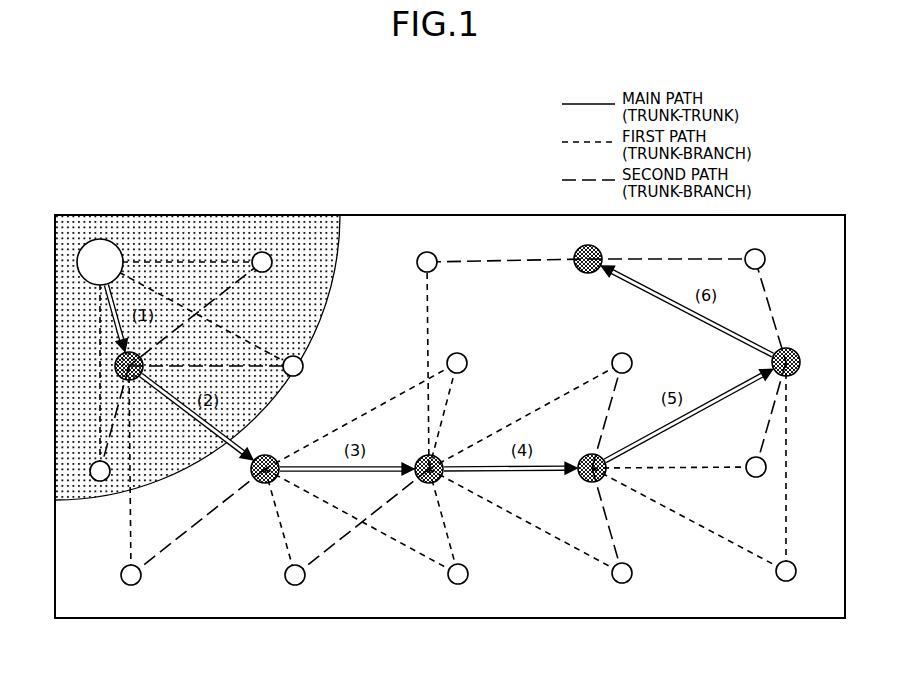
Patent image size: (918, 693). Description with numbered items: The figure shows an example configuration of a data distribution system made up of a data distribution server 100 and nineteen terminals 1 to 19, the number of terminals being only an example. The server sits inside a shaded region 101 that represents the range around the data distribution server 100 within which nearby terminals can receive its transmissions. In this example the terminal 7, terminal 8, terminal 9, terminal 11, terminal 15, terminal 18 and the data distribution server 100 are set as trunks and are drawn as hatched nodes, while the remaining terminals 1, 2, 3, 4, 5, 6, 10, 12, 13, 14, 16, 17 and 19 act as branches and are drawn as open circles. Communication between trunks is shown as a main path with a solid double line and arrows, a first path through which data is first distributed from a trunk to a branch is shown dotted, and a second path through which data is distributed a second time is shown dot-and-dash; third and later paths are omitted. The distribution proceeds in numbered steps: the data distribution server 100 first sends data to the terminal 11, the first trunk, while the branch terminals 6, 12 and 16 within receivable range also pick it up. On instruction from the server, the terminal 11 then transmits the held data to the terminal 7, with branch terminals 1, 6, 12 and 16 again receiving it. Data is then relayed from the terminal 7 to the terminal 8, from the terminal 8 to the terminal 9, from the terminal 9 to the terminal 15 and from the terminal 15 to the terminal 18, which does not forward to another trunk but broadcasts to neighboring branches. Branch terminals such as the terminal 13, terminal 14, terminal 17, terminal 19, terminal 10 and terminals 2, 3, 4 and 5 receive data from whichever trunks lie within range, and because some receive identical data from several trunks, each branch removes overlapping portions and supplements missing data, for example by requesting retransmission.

The data distribution server 100 is at (100, 238).
The coverage area of base station 101 is at (338, 235).
The terminal 1 is at (141, 579).
The terminal 2 is at (305, 579).
The terminal 3 is at (468, 578).
The terminal 4 is at (632, 577).
The terminal 5 is at (776, 575).
The terminal 6 is at (100, 482).
The terminal 7 is at (273, 457).
The terminal 8 is at (420, 457).
The terminal 9 is at (583, 457).
The terminal 10 is at (756, 478).
The terminal 11 is at (114, 366).
The terminal 12 is at (302, 361).
The terminal 13 is at (457, 352).
The terminal 14 is at (622, 352).
The terminal 15 is at (793, 350).
The terminal 16 is at (262, 251).
The terminal 17 is at (416, 262).
The terminal 18 is at (588, 274).
The terminal 19 is at (766, 260).